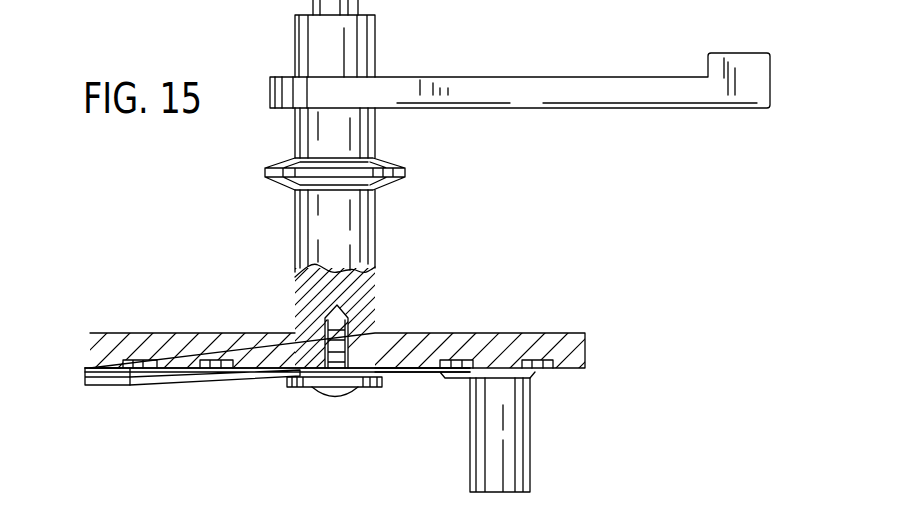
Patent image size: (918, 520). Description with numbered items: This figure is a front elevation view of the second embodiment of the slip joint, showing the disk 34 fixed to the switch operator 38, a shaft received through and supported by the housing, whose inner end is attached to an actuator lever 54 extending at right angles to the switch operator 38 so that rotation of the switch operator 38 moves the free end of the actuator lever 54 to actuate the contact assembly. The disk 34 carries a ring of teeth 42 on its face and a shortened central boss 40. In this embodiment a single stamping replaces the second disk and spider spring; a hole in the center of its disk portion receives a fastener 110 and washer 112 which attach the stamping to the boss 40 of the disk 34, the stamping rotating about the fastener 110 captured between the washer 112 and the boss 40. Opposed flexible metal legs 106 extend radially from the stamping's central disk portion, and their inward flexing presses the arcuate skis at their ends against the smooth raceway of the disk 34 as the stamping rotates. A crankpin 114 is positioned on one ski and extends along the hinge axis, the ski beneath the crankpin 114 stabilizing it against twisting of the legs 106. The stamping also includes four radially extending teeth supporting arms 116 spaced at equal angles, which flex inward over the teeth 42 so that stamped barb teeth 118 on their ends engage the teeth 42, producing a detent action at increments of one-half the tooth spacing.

The disk 34 is at (588, 352).
The switch operator 38 is at (357, 237).
The boss 40 is at (258, 342).
The teeth 42 is at (87, 368).
The actuator lever 54 is at (497, 86).
The flexible metal legs 106 is at (437, 380).
The fastener 110 is at (337, 396).
The washer 112 is at (298, 392).
The crankpin 114 is at (512, 431).
The teeth supporting arms 116 is at (200, 383).
The barb teeth 118 is at (88, 378).